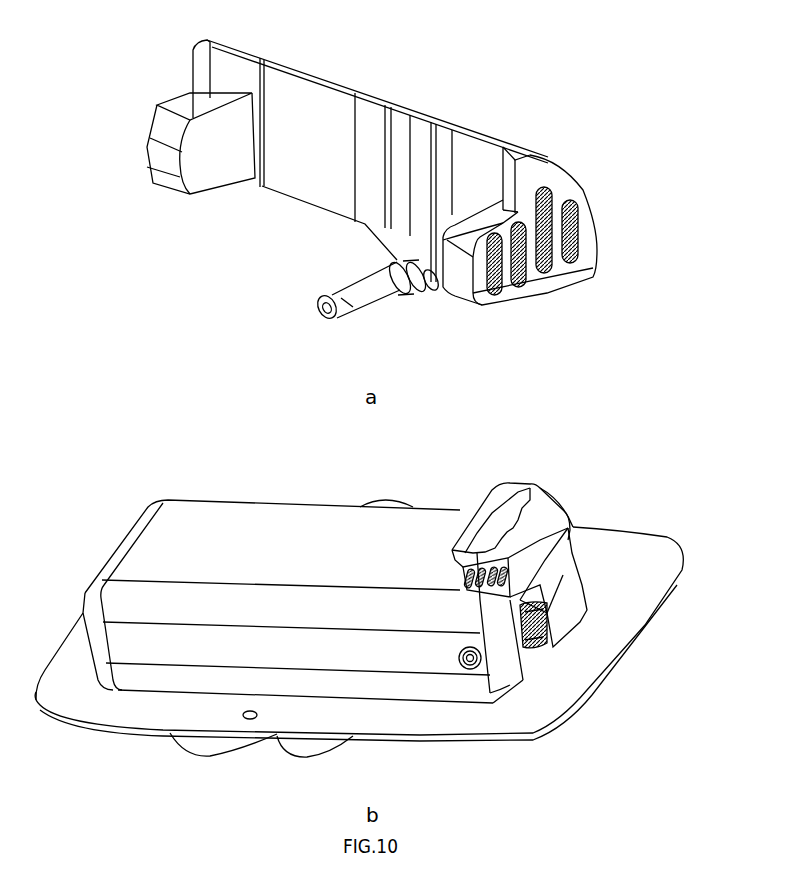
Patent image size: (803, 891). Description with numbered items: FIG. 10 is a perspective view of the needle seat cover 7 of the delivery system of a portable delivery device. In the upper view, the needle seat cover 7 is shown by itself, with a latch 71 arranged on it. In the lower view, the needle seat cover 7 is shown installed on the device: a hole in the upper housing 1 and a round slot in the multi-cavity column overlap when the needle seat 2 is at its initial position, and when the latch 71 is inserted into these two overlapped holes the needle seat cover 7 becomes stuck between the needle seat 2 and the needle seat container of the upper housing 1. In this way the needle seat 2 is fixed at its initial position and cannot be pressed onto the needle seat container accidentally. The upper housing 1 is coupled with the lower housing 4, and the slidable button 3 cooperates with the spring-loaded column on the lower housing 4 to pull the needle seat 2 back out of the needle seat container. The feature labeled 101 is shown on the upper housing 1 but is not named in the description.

The upper housing 1 is at (177, 555).
The needle seat 2 is at (493, 517).
The slidable button 3 is at (543, 638).
The lower housing 4 is at (503, 680).
The needle seat cover 7 is at (457, 185).
The latch 71 is at (343, 292).
The mounting hole 101 is at (468, 660).